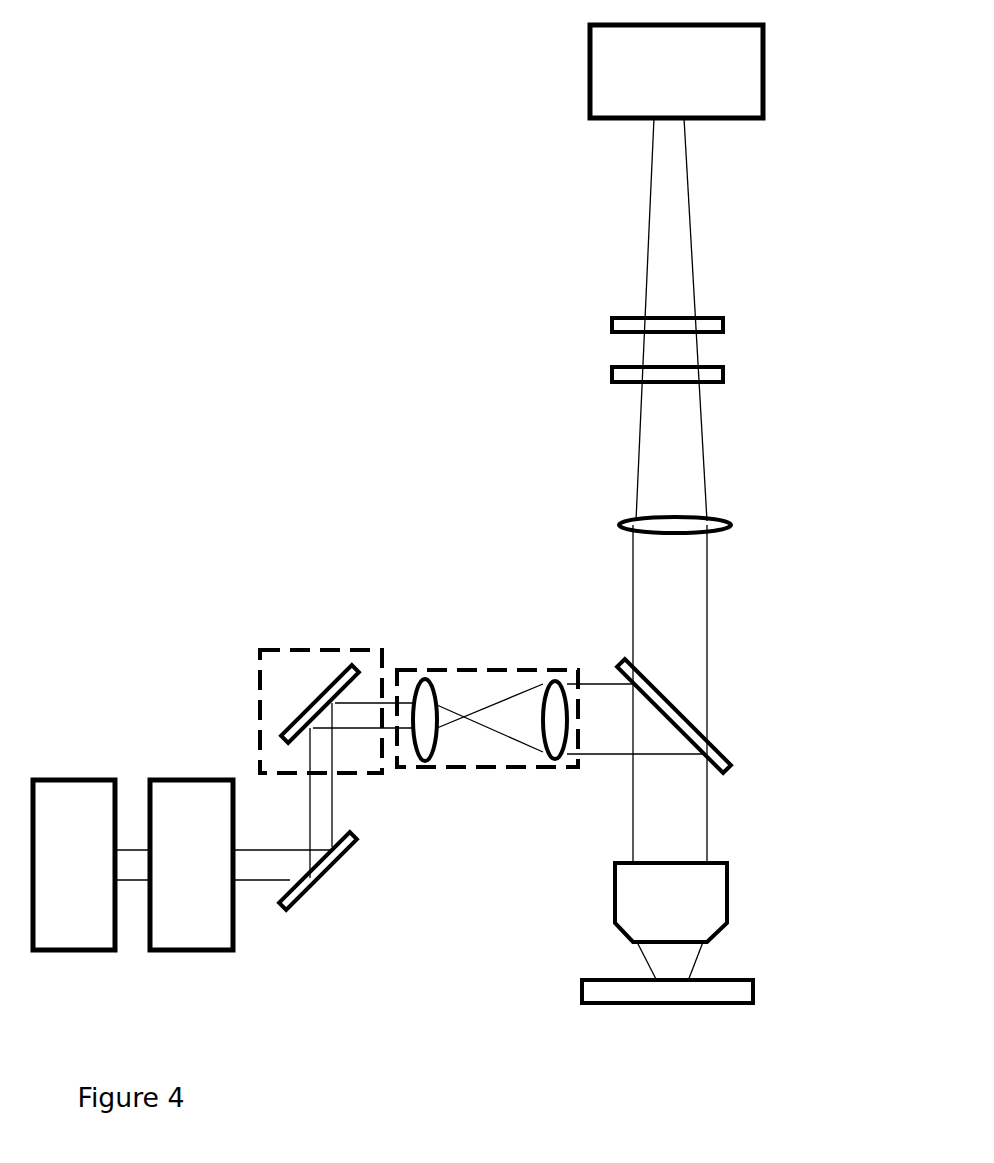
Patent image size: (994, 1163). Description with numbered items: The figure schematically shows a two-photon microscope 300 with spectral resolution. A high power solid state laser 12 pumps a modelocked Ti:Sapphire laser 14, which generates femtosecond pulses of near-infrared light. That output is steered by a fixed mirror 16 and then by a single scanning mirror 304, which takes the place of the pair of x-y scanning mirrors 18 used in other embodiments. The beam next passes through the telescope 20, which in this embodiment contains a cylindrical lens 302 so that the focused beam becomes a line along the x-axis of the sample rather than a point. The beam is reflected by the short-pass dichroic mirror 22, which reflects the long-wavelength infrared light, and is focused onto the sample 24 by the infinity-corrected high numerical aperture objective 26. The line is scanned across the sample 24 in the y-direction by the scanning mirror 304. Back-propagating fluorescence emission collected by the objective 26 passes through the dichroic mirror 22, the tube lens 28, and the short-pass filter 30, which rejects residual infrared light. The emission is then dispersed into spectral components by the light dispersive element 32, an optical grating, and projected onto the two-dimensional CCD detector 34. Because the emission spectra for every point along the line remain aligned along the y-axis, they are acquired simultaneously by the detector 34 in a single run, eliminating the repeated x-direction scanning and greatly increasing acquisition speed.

The high power solid state laser 12 is at (67, 780).
The modelocked Ti:Sapphire laser 14 is at (202, 780).
The fixed mirror 16 is at (325, 877).
The x-y scanning mirrors 18 is at (255, 665).
The telescope 20 is at (487, 668).
The short-pass dichroic mirror 22 is at (730, 762).
The sample 24 is at (753, 991).
The infinity-corrected high numerical aperture objective 26 is at (727, 903).
The tube lens 28 is at (731, 523).
The short-pass filter 30 is at (723, 373).
The light dispersive element 32 is at (723, 325).
The CCD detector 34 is at (763, 75).
The microscope 300 is at (283, 262).
The cylindrical lens 302 is at (432, 748).
The single scanning mirror 304 is at (313, 697).